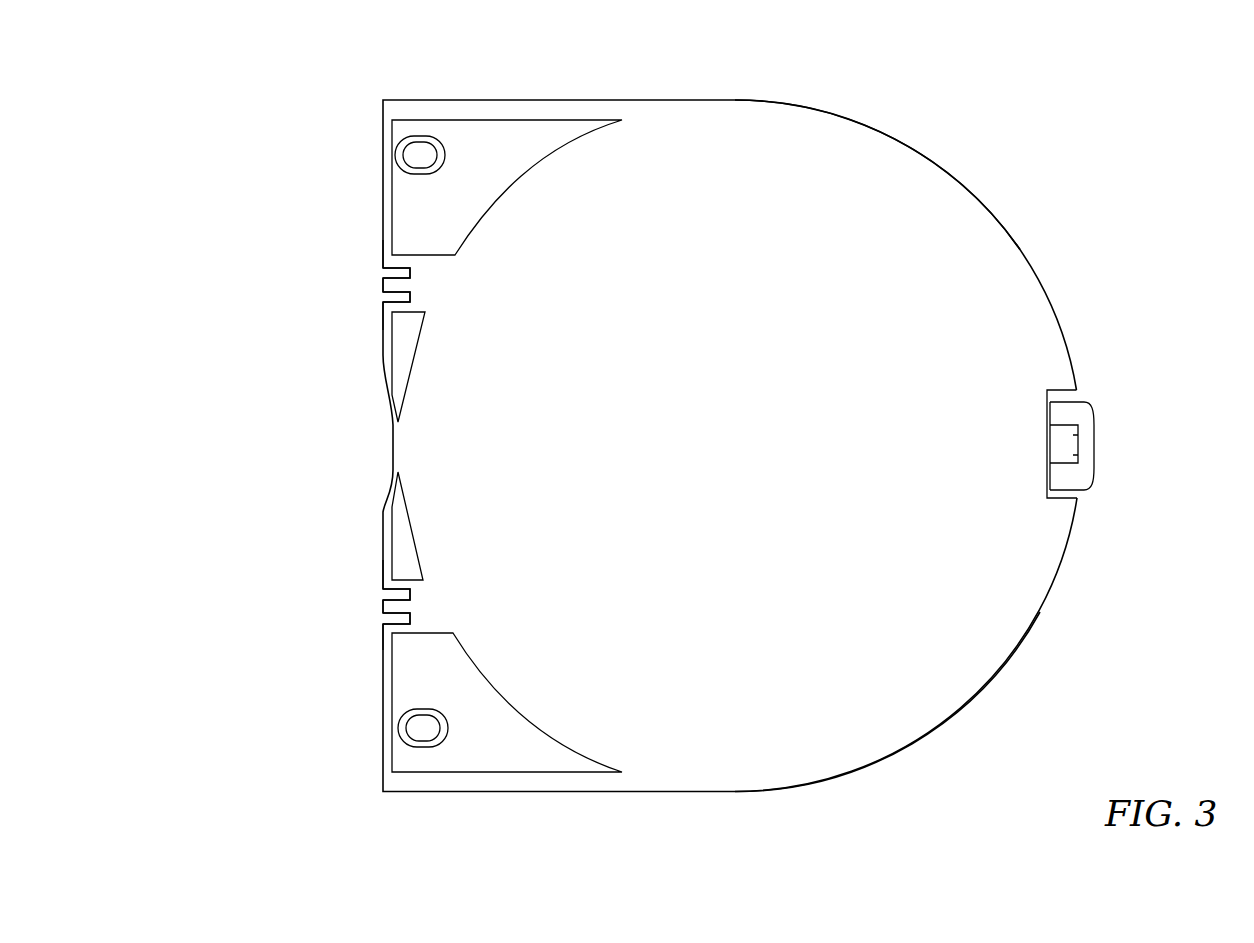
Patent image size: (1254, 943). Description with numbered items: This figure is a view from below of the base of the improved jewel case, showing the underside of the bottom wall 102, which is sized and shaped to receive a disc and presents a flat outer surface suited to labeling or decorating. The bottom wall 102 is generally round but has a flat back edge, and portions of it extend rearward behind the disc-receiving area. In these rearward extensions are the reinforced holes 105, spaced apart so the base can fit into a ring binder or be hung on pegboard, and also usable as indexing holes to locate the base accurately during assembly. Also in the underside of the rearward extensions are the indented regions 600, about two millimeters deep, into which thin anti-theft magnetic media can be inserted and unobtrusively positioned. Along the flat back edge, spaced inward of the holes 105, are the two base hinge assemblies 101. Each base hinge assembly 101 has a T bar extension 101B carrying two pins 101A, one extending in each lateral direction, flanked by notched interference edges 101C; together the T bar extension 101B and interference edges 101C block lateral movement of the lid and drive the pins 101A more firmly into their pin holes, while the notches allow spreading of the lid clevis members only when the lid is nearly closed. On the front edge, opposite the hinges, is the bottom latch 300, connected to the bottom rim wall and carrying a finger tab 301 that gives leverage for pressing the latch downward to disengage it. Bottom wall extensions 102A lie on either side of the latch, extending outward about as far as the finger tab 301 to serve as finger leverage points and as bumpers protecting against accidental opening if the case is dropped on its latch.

The base hinge assembly 101 is at (205, 218).
The pin 101A is at (383, 273).
The T bar extension 101B is at (383, 287).
The interference edge 101C is at (383, 268).
The bottom wall 102 is at (840, 218).
The bottom wall extension 102A is at (1027, 265).
The reinforced hole 105 is at (412, 157).
The bottom latch 300 is at (1072, 473).
The finger tab 301 is at (1093, 428).
The indented region 600 is at (518, 140).